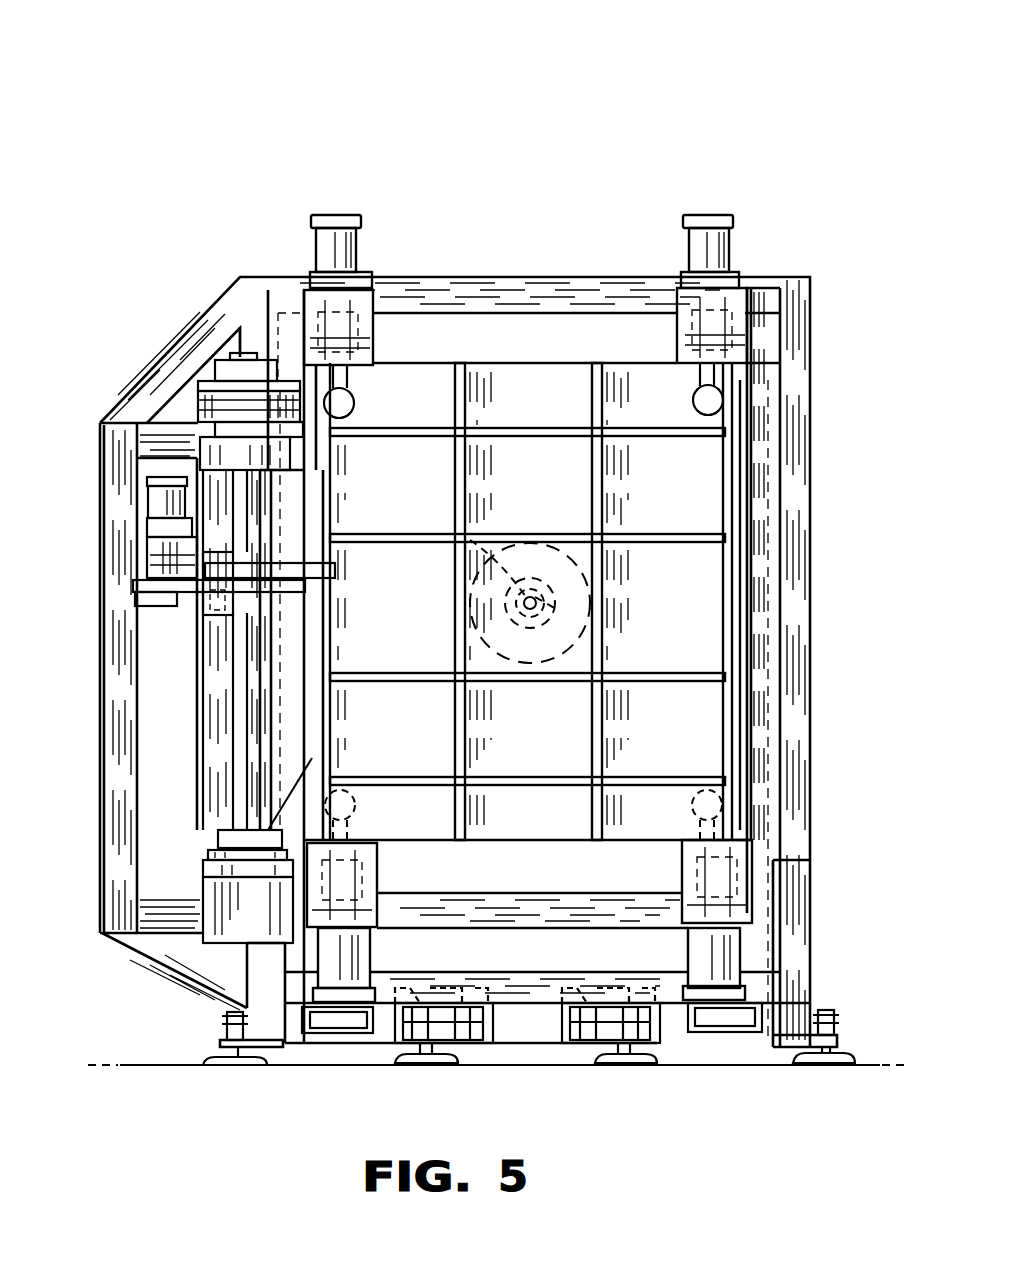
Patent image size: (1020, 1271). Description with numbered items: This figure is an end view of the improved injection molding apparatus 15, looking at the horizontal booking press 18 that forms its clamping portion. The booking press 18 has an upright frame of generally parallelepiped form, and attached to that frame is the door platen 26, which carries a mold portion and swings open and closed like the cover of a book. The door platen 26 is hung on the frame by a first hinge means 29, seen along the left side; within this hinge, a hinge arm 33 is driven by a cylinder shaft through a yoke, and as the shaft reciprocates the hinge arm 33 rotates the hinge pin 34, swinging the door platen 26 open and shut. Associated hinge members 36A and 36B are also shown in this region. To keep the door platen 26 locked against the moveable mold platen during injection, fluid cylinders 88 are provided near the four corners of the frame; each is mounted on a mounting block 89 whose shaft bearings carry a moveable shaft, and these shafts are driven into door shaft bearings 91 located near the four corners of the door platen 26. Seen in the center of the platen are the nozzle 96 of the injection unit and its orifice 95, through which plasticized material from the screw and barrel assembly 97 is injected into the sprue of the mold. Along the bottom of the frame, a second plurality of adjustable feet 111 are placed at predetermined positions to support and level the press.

The injection molding apparatus 15 is at (284, 62).
The horizontal booking press 18 is at (483, 272).
The door platen 26 is at (678, 505).
The first hinge means 29 is at (227, 733).
The hinge arm 33 is at (175, 593).
The hinge pin 34 is at (240, 665).
The arm 36A is at (293, 569).
The flange assembly 36B is at (210, 422).
The fluid cylinders 88 is at (325, 222).
The mounting blocks 89 is at (363, 305).
The door shaft bearings 91 is at (357, 385).
The orifice 95 is at (546, 614).
The nozzle 96 is at (518, 614).
The screw and barrel assembly 97 is at (572, 560).
The adjustable feet 111 is at (870, 1010).